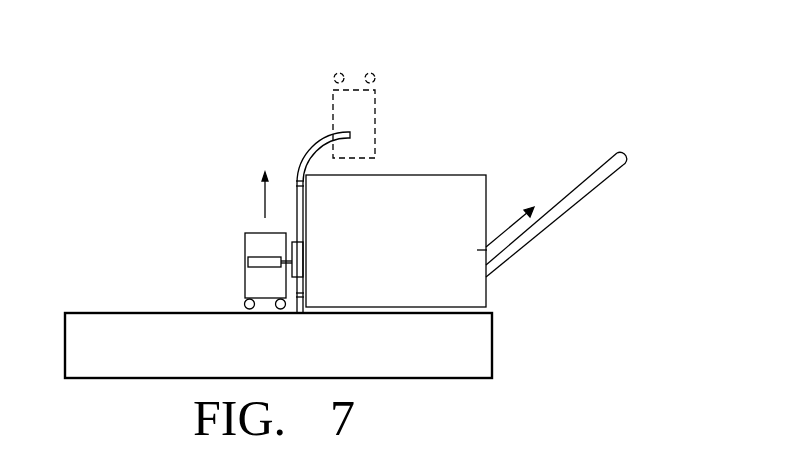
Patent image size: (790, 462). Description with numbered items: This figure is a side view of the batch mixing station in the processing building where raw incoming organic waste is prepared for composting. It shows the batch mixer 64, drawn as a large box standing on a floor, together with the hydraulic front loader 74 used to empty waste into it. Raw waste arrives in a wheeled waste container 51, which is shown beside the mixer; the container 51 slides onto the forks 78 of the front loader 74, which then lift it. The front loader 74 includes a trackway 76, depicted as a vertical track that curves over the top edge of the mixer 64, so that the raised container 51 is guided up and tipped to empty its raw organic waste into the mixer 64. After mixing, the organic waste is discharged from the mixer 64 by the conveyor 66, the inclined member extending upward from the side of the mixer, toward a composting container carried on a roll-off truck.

The waste container 51 is at (245, 245).
The batch mixer 64 is at (425, 208).
The conveyor 66 is at (540, 227).
The hydraulic front loader 74 is at (341, 235).
The trackway 76 is at (310, 145).
The forks 78 is at (243, 262).